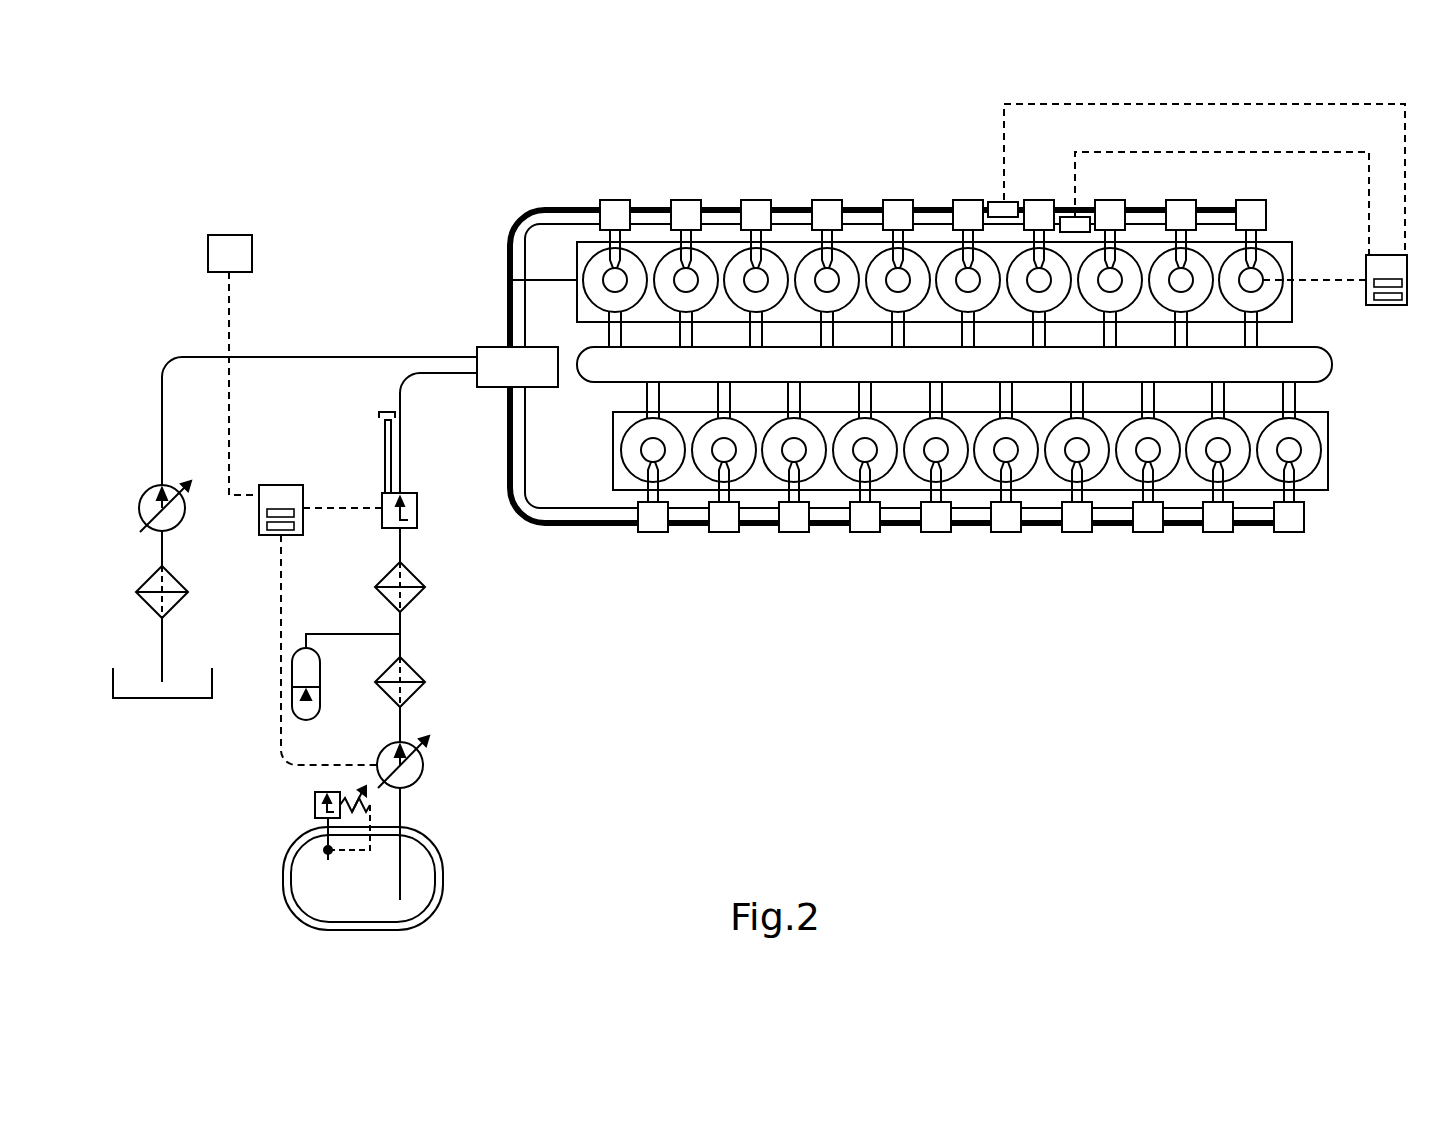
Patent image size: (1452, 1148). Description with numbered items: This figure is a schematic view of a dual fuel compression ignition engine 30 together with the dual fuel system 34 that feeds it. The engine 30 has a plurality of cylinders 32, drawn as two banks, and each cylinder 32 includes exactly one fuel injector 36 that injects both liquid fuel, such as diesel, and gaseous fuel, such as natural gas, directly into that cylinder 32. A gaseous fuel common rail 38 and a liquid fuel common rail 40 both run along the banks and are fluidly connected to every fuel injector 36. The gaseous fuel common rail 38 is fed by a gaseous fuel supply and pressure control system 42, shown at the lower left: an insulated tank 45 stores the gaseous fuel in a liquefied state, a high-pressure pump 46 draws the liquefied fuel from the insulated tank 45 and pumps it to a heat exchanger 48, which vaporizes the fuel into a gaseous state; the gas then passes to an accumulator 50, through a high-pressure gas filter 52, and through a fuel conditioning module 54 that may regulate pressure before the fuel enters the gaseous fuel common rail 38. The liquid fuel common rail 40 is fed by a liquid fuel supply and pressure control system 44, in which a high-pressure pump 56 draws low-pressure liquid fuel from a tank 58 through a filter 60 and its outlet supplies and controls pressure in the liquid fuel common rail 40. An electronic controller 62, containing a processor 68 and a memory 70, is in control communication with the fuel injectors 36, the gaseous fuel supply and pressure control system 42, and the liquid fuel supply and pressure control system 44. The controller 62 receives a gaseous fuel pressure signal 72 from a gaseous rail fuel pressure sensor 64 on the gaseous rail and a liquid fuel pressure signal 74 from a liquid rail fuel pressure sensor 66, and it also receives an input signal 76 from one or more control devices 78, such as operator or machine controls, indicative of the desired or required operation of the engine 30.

The dual fuel compression ignition engine 30 is at (943, 366).
The cylinders 32 is at (598, 303).
The dual fuel system 34 is at (372, 247).
The fuel injector 36 is at (620, 270).
The gaseous fuel common rail 38 is at (553, 207).
The liquid fuel common rail 40 is at (583, 222).
The gaseous fuel supply and pressure control system 42 is at (240, 753).
The liquid fuel supply and pressure control system 44 is at (140, 364).
The insulated tank 45 is at (443, 872).
The high-pressure pump 46 is at (423, 760).
The heat exchanger 48 is at (420, 668).
The accumulator 50 is at (320, 668).
The high-pressure gas filter 52 is at (420, 572).
The fuel conditioning module 54 is at (417, 508).
The high-pressure pump 56 is at (185, 518).
The tank 58 is at (155, 700).
The filter 60 is at (182, 578).
The electronic controller 62 is at (1384, 254).
The gaseous rail fuel pressure sensor 64 is at (1012, 201).
The liquid rail fuel pressure sensor 66 is at (1074, 211).
The processor 68 is at (1402, 283).
The memory 70 is at (1388, 305).
The gaseous fuel pressure signal 72 is at (1071, 104).
The liquid fuel pressure signal 74 is at (1135, 151).
The input signal 76 is at (231, 321).
The control devices 78 is at (252, 250).